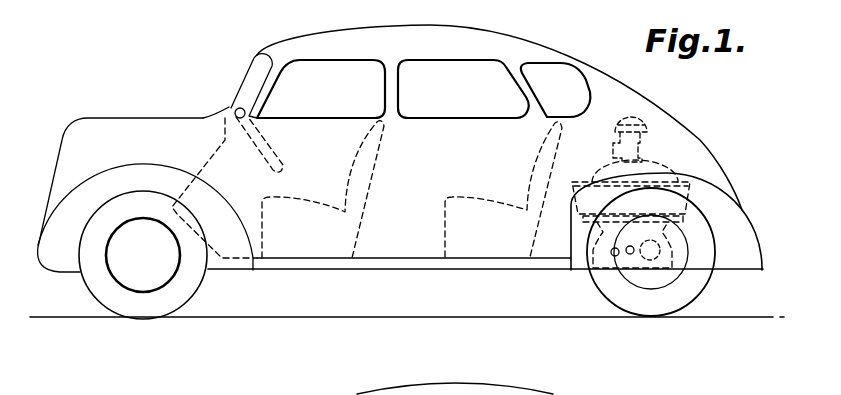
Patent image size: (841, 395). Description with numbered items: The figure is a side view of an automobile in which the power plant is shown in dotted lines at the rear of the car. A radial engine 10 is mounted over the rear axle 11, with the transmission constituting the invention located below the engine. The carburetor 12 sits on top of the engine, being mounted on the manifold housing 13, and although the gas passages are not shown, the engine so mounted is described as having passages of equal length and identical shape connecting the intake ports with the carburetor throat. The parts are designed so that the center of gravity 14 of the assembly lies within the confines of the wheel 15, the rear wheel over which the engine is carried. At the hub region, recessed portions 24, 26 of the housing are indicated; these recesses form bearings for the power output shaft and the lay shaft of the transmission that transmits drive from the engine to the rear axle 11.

The radial engine 10 is at (697, 190).
The rear axle 11 is at (653, 258).
The carburetor 12 is at (637, 142).
The manifold housing 13 is at (650, 172).
The center of gravity 14 is at (633, 207).
The wheel 15 is at (703, 283).
The recessed portion 24 is at (628, 253).
The recessed portion 26 is at (613, 254).